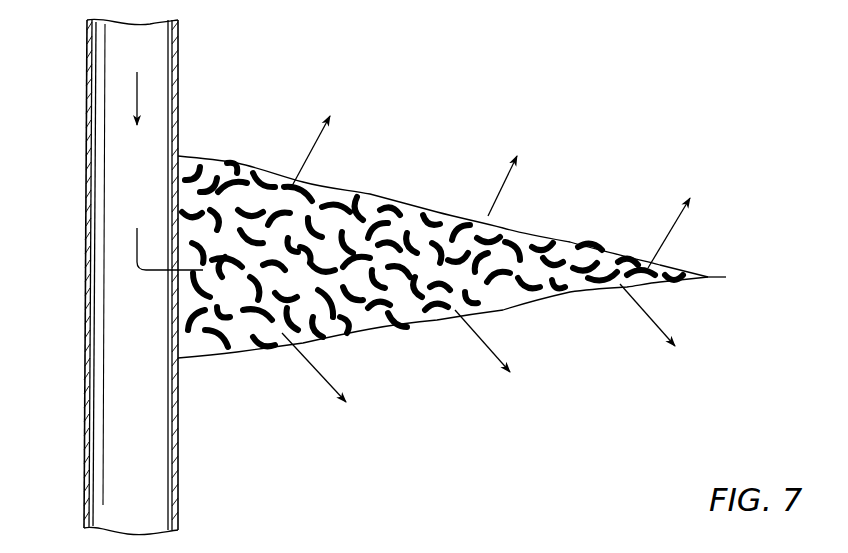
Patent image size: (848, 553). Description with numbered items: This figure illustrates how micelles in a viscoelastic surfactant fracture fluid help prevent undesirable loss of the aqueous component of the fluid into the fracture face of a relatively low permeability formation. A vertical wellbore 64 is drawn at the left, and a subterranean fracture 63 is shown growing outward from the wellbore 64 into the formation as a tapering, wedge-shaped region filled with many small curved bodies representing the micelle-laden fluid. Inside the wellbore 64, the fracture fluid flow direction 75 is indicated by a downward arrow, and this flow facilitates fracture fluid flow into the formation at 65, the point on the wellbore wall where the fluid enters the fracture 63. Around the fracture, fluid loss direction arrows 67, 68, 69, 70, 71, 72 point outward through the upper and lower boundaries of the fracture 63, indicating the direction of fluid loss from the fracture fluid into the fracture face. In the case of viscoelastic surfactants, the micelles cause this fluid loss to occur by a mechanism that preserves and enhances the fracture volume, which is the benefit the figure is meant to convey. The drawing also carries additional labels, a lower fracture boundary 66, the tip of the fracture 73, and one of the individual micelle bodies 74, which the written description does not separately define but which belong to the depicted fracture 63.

The subterranean fracture 63 is at (600, 122).
The wellbore 64 is at (160, 44).
The fracture fluid flow into the formation 65 is at (140, 270).
The lower boundary of spray 66 is at (546, 293).
The fluid loss direction arrow 67 is at (312, 140).
The fluid loss direction arrow 68 is at (494, 200).
The fluid loss direction arrow 69 is at (670, 224).
The fluid loss direction arrow 70 is at (316, 378).
The fluid loss direction arrow 71 is at (488, 350).
The fluid loss direction arrow 72 is at (653, 326).
The tip of spray 73 is at (726, 277).
The particle 74 is at (404, 318).
The fracture fluid flow direction 75 is at (137, 88).